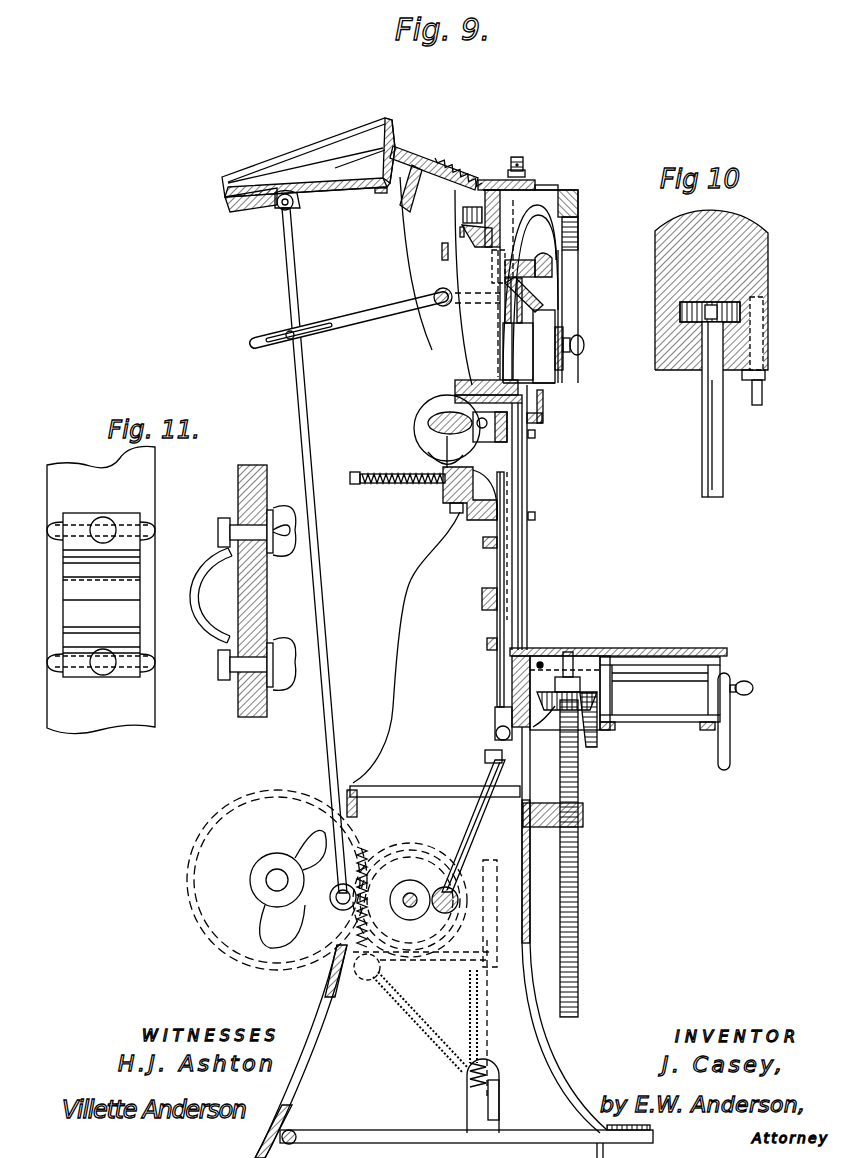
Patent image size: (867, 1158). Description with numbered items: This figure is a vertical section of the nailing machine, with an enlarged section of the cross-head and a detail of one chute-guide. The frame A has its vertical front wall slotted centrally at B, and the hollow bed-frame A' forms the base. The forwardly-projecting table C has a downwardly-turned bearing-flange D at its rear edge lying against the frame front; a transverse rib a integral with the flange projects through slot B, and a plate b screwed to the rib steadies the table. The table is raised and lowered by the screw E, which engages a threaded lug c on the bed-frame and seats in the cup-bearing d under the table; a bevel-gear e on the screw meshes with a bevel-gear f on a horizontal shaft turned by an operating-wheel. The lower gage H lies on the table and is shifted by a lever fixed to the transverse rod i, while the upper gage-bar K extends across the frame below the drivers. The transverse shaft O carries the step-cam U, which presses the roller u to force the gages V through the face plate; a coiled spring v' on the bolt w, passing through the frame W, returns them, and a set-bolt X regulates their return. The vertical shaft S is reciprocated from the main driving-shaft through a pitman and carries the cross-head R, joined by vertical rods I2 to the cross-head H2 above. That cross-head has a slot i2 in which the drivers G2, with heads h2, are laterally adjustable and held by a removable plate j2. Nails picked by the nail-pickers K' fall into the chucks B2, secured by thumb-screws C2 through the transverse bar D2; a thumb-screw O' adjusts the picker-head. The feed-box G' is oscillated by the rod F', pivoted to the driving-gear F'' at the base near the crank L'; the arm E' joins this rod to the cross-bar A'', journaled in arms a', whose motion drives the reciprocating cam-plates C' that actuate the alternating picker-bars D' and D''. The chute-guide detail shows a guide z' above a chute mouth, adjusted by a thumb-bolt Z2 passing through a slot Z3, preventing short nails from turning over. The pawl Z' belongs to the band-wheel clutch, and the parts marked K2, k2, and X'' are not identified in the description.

In FIG. 9, the feed-box G' is at (494, 443).
In FIG. 9, the rod F' is at (312, 543).
In FIG. 9, the arm E' is at (487, 521).
In FIG. 9, the cross-bar A'' is at (421, 292).
In FIG. 9, the arms a' is at (436, 281).
In FIG. 9, the cam-plates C' is at (530, 158).
In FIG. 9, the thumb-screw O' is at (509, 153).
In FIG. 9, the nail-pickers K' is at (520, 176).
In FIG. 9, the picker-bar D'' is at (530, 286).
In FIG. 9, the picker-bar D' is at (506, 204).
In FIG. 9, the screw E is at (569, 620).
In FIG. 9, the horizontal pawl Z' is at (471, 213).
In FIG. 9, the wedge K2 is at (477, 243).
In FIG. 9, the head h2 is at (528, 265).
In FIG. 9, the plate j2 is at (552, 277).
In FIG. 10, the plate j2 is at (768, 352).
In FIG. 9, the drivers G2 is at (542, 298).
In FIG. 10, the drivers G2 is at (733, 409).
In FIG. 9, the vertical rods I2 is at (518, 351).
In FIG. 9, the chucks B2 is at (548, 346).
In FIG. 9, the thumb-screws C2 is at (587, 336).
In FIG. 9, the transverse bar D2 is at (580, 368).
In FIG. 9, the upper gage-bar K is at (545, 406).
In FIG. 9, the transverse shaft O is at (429, 428).
In FIG. 9, the step-cam U is at (418, 438).
In FIG. 9, the roller u is at (490, 419).
In FIG. 9, the slot B is at (527, 580).
In FIG. 9, the plate b is at (494, 589).
In FIG. 9, the gages V is at (541, 482).
In FIG. 9, the frame W is at (448, 493).
In FIG. 9, the coiled spring v' is at (427, 674).
In FIG. 9, the bolt w is at (357, 503).
In FIG. 9, the vertical shaft S is at (498, 568).
In FIG. 9, the cross-head R is at (480, 612).
In FIG. 9, the frame A is at (406, 647).
In FIG. 9, the lower gage H is at (537, 640).
In FIG. 9, the table C is at (618, 643).
In FIG. 9, the bearing-flange D is at (533, 799).
In FIG. 9, the transverse rod i is at (543, 666).
In FIG. 9, the cup-bearing d is at (578, 664).
In FIG. 9, the bevel-gear e is at (555, 684).
In FIG. 9, the transverse rib a is at (544, 716).
In FIG. 9, the bevel-gear f is at (591, 727).
In FIG. 9, the lug c is at (583, 815).
In FIG. 9, the driving-gear F'' is at (277, 880).
In FIG. 9, the crank L' is at (417, 900).
In FIG. 9, the hollow bed-frame A' is at (420, 1020).
In FIG. 9, the spring post X'' is at (444, 1096).
In FIG. 9, the set-bolt X is at (454, 1050).
In FIG. 10, the cross-head H2 is at (768, 258).
In FIG. 10, the slot i2 is at (768, 307).
In FIG. 10, the pin k2 is at (712, 299).
In FIG. 11, the guides z' is at (147, 595).
In FIG. 11, the thumb-bolts Z2 is at (103, 520).
In FIG. 11, the slots Z3 is at (150, 530).